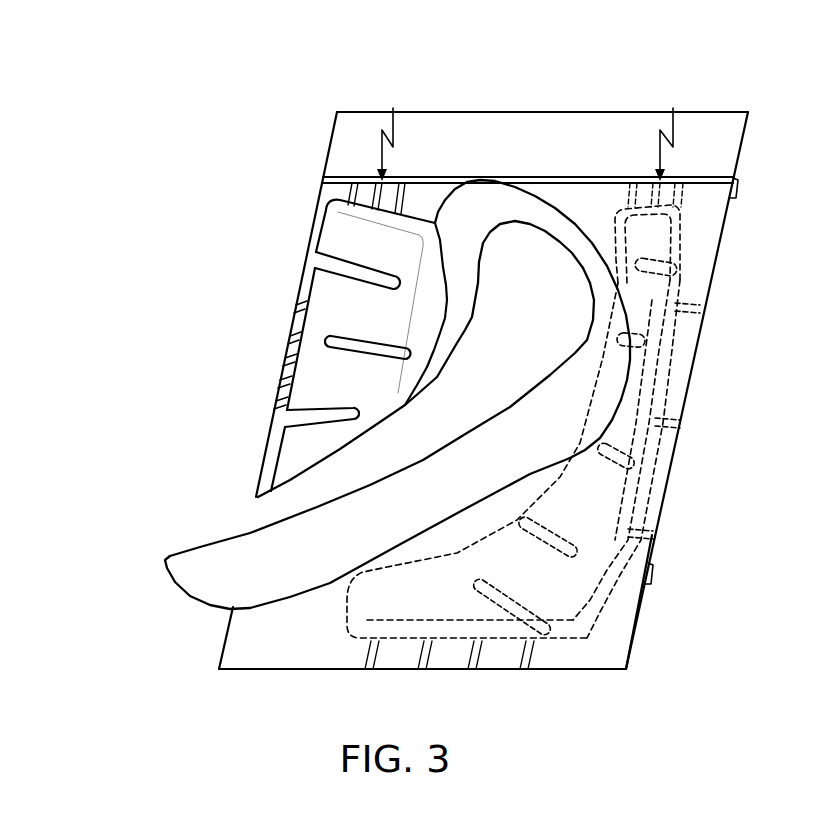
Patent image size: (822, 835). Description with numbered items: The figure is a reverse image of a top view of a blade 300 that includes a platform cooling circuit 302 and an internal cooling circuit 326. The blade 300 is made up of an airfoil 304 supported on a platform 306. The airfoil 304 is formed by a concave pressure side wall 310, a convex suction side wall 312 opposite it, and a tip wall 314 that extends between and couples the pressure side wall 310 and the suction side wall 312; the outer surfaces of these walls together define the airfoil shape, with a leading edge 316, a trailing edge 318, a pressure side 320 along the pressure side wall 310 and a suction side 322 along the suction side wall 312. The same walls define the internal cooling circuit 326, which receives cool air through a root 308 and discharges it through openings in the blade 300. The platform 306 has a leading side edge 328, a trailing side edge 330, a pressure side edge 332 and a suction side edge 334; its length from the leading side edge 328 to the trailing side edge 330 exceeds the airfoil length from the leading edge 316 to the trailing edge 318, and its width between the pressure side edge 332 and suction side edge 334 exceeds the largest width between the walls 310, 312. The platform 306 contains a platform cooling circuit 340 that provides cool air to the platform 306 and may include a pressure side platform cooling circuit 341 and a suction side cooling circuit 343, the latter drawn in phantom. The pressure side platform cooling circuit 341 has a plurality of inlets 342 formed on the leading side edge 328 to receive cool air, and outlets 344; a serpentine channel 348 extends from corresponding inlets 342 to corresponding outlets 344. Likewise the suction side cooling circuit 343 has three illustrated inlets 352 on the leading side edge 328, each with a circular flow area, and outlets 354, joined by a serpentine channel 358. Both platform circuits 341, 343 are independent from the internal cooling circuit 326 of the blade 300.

The blade 300 is at (602, 190).
The platform cooling circuit 302 is at (304, 297).
The airfoil 304 is at (605, 312).
The platform 306 is at (718, 213).
The root 308 is at (350, 138).
The pressure side wall 310 is at (393, 406).
The suction side wall 312 is at (597, 357).
The tip wall 314 is at (321, 504).
The leading edge 316 is at (477, 183).
The trailing edge 318 is at (188, 587).
The pressure side 320 is at (440, 313).
The suction side 322 is at (537, 445).
The internal cooling circuit 326 is at (535, 371).
The leading side edge 328 is at (541, 178).
The trailing side edge 330 is at (497, 670).
The pressure side edge 332 is at (257, 484).
The suction side edge 334 is at (653, 545).
The platform cooling circuit 340 is at (358, 238).
The pressure side platform cooling circuit 341 is at (300, 259).
The inlets 342 is at (393, 130).
The suction side cooling circuit 343 is at (697, 263).
The outlets 344 is at (258, 374).
The channel 348 is at (316, 322).
The inlets 352 is at (673, 130).
The outlets 354 is at (680, 418).
The channel 358 is at (573, 585).